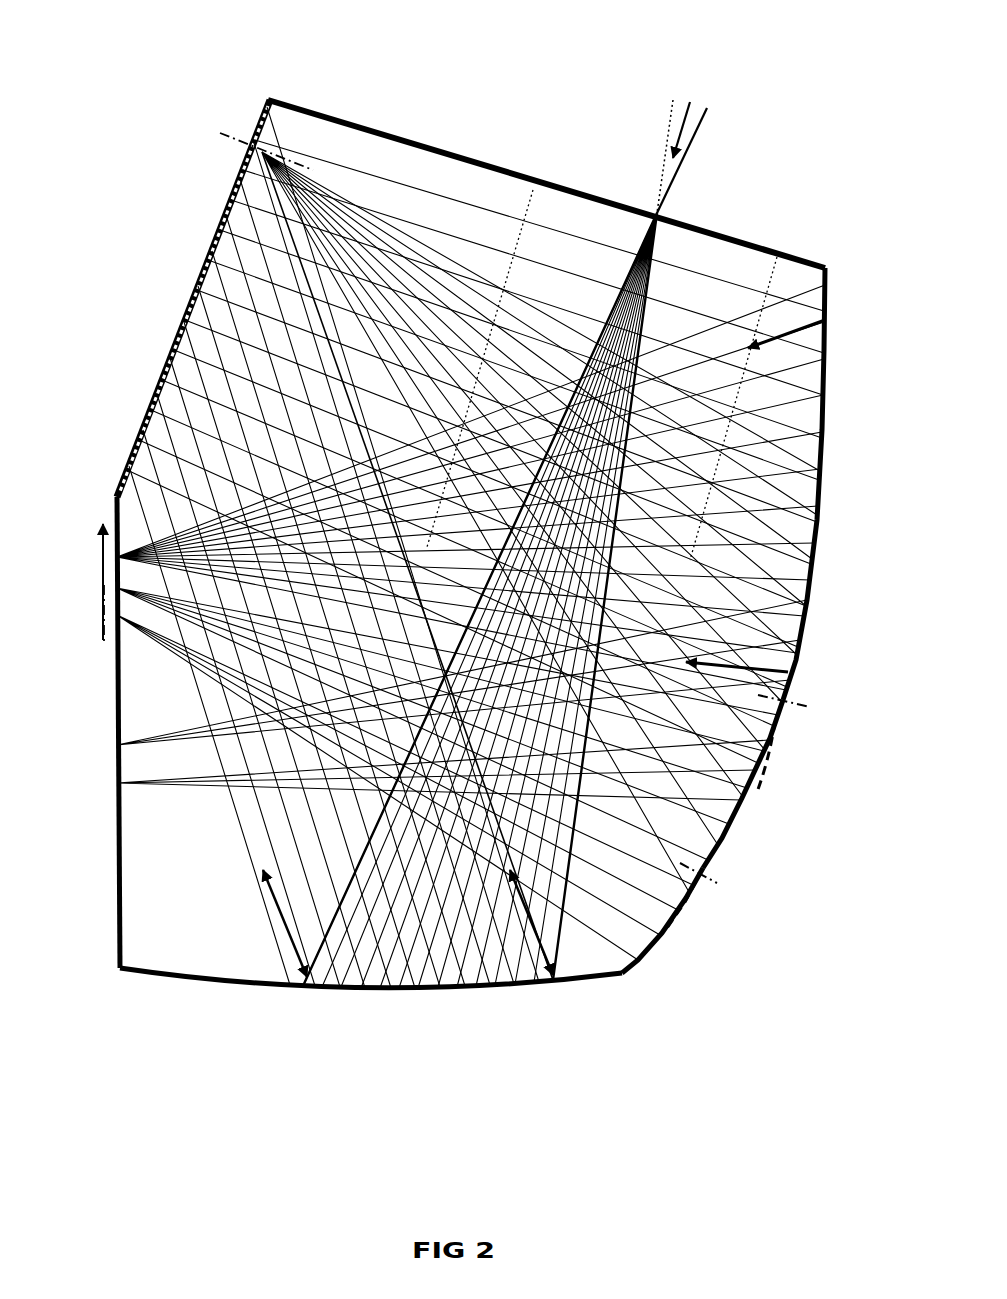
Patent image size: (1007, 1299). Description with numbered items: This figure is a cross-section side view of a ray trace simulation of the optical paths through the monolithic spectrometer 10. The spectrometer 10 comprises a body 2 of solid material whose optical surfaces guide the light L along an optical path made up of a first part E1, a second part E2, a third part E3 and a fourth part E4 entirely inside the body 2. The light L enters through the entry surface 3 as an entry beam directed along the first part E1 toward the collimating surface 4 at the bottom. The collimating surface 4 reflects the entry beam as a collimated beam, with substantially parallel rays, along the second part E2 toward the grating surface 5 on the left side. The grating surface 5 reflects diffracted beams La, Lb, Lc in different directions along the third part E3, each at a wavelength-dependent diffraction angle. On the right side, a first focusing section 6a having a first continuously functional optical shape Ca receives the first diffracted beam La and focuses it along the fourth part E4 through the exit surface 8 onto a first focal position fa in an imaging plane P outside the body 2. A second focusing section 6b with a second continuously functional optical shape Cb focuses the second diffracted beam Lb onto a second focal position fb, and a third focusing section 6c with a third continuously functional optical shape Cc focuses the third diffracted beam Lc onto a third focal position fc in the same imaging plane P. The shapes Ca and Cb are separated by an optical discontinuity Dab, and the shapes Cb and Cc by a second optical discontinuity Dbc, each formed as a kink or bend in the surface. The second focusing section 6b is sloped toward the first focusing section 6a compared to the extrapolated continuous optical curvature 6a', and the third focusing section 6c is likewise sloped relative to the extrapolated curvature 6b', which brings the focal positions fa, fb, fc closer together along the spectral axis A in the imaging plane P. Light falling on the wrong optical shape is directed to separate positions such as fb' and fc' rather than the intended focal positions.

The spectrometer 10 is at (98, 73).
The body 2 is at (185, 891).
The entry surface 3 is at (694, 212).
The collimating surface 4 is at (432, 1012).
The grating surface 5 is at (182, 285).
The first focusing section 6a is at (837, 484).
The second focusing section 6b is at (755, 784).
The third focusing section 6c is at (650, 948).
The extrapolated continuous optical curvature of the first focusing section 6a' is at (800, 757).
The extrapolated continuous optical curvature of the second focusing section 6b' is at (715, 910).
The exit surface 8 is at (110, 688).
The light L is at (682, 144).
The first part of the optical path E1 is at (640, 360).
The second part of the optical path E2 is at (318, 863).
The third part of the optical path E3 is at (473, 338).
The fourth part of the optical path E4 is at (166, 571).
The first diffracted beam La is at (731, 498).
The second diffracted beam Lb is at (683, 738).
The third diffracted beam Lc is at (616, 873).
The first continuously functional optical shape Ca is at (806, 525).
The second continuously functional optical shape Cb is at (734, 793).
The third continuously functional optical shape Cc is at (654, 921).
The optical discontinuity Dab is at (811, 710).
The second optical discontinuity Dbc is at (723, 886).
The imaging plane P is at (103, 504).
The spectral axis A is at (100, 530).
The first focal position fa is at (99, 556).
The second focal position fb is at (64, 590).
The third focal position fc is at (63, 627).
The another position fb' is at (159, 714).
The focal point c prime fc' is at (143, 812).